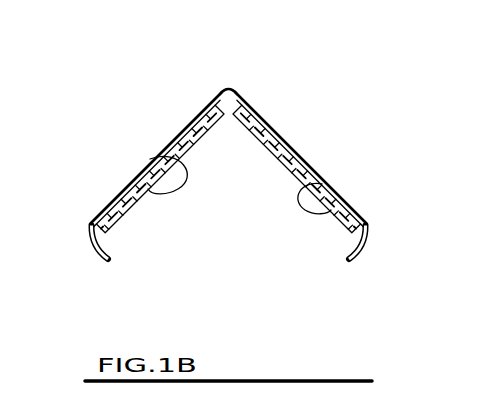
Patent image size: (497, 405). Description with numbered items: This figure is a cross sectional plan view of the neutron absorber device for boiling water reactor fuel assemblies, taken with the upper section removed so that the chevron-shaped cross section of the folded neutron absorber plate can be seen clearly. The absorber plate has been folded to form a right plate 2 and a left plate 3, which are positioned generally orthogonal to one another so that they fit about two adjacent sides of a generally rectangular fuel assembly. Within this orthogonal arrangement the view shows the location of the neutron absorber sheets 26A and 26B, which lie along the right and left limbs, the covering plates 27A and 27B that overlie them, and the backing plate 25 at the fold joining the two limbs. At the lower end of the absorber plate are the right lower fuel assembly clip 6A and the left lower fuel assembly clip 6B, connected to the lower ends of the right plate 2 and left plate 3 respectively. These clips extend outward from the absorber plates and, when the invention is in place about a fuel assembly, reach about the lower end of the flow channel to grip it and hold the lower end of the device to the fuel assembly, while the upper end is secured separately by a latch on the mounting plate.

The right plate 2 is at (272, 127).
The left plate 3 is at (190, 120).
The backing plate 25 is at (231, 89).
The neutron absorber sheet 26A is at (172, 141).
The neutron absorber sheet 26B is at (302, 160).
The covering plate 27A is at (125, 188).
The covering plate 27B is at (340, 206).
The right lower fuel assembly clip 6A is at (360, 250).
The left lower fuel assembly clip 6B is at (92, 251).